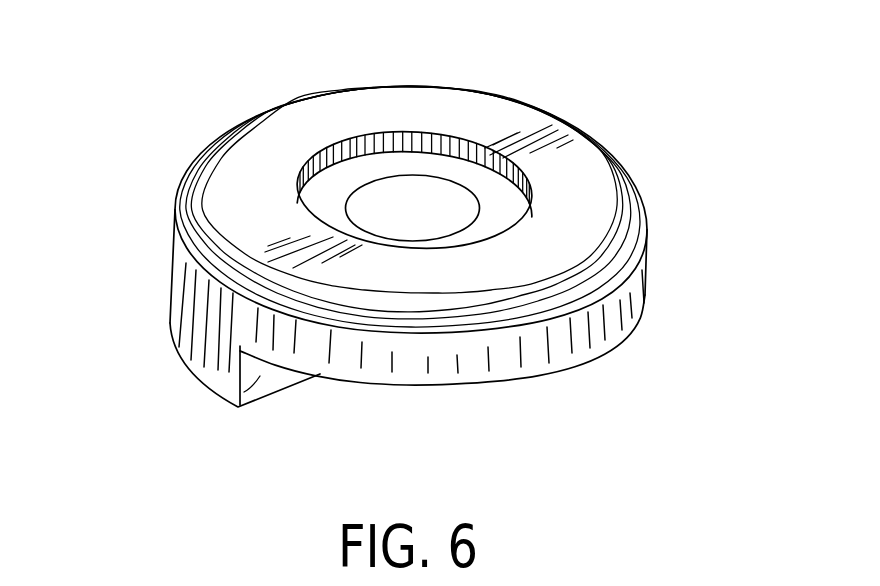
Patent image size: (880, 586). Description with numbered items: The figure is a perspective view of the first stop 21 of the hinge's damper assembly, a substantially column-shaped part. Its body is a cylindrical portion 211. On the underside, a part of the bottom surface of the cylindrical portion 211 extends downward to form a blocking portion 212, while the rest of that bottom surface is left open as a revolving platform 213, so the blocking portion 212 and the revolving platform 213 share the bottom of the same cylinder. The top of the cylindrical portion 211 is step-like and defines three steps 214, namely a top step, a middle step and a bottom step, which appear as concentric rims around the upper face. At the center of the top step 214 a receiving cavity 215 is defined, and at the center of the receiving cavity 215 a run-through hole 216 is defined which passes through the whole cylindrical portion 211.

The first stop 21 is at (625, 342).
The cylindrical portion 211 is at (643, 297).
The blocking portion 212 is at (240, 405).
The open revolving platform 213 is at (407, 387).
The steps 214 is at (570, 158).
The receiving cavity 215 is at (348, 160).
The run-through hole 216 is at (416, 191).